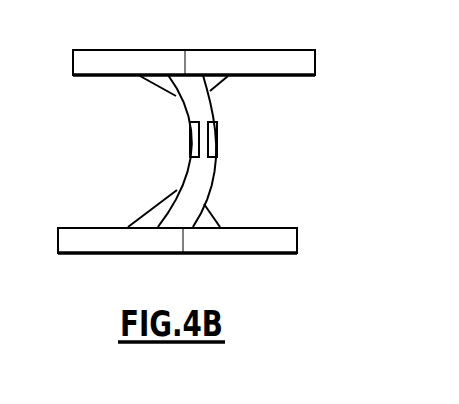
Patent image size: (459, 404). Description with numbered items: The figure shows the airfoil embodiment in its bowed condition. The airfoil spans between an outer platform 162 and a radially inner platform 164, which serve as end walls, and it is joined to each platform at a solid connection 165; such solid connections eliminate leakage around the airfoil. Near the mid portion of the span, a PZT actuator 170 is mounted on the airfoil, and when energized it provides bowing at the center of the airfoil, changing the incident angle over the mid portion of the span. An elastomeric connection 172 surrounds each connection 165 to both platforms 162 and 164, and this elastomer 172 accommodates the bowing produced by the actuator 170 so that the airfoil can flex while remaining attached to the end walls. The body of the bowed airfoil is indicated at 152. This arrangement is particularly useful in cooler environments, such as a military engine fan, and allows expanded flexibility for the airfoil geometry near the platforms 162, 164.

The strut / flexible member 152 is at (197, 182).
The outer platform 162 is at (110, 65).
The radially inner platform 164 is at (287, 240).
The connection 165 is at (186, 70).
The PZT actuator 170 is at (192, 132).
The elastomeric connection 172 is at (157, 86).